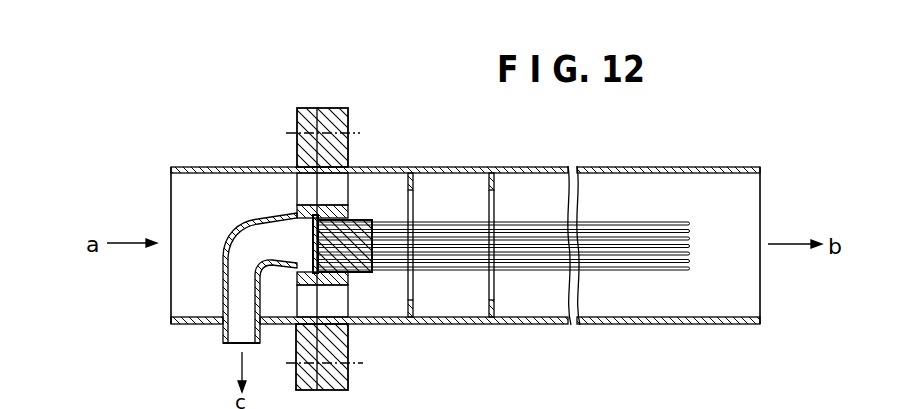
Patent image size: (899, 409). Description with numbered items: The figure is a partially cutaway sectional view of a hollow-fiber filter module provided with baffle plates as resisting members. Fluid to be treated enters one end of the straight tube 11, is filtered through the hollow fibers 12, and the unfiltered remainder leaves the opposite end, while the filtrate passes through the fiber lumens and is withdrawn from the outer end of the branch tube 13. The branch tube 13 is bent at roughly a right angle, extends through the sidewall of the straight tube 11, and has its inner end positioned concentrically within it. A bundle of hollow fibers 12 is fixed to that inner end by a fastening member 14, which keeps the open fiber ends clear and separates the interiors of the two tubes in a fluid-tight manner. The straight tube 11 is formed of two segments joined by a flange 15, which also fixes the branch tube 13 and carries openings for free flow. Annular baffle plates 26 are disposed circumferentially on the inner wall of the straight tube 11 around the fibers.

The straight tube 11 is at (245, 167).
The hollow fibers 12 is at (630, 223).
The branch tube 13 is at (246, 222).
The fastening member 14 is at (358, 217).
The flange 15 is at (350, 123).
The baffle plates 26 is at (415, 183).